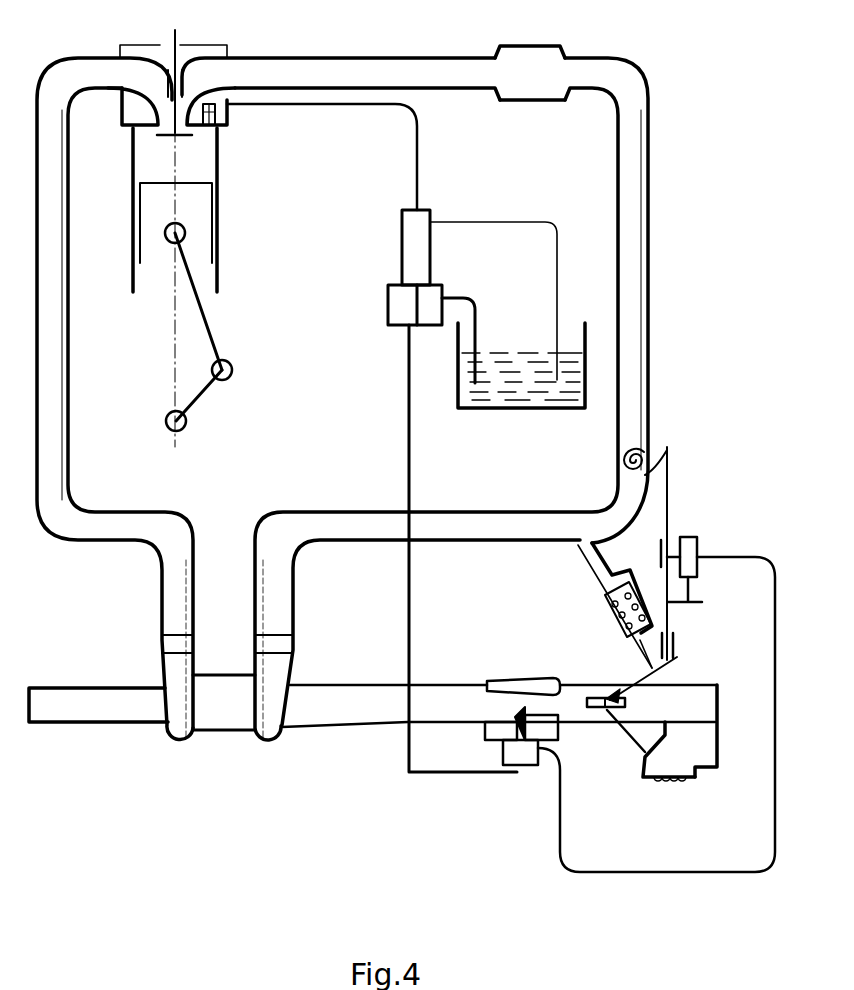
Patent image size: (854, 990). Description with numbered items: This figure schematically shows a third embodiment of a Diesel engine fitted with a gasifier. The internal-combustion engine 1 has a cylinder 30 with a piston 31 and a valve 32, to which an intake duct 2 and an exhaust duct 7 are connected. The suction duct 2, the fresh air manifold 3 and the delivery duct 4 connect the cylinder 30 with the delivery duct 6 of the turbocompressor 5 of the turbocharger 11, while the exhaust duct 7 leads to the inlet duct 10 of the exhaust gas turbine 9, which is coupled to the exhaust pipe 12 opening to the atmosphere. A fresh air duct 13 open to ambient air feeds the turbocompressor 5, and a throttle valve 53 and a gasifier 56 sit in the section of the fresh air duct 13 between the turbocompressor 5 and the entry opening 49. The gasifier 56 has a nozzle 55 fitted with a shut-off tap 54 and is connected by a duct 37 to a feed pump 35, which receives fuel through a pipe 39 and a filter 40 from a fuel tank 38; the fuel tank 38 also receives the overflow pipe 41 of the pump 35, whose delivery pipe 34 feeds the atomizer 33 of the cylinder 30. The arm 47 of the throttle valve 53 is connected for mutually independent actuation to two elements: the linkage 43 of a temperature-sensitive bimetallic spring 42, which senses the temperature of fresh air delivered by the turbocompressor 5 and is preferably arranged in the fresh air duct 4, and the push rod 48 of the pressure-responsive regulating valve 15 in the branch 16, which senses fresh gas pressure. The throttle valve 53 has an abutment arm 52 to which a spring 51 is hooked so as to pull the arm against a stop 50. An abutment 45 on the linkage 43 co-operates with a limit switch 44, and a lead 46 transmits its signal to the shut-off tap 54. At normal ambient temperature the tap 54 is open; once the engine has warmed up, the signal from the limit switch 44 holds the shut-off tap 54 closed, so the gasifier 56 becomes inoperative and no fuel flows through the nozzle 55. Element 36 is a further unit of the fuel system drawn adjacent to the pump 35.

The internal-combustion engine 1 is at (195, 62).
The intake duct 2 is at (368, 72).
The fresh air manifold 3 is at (523, 62).
The delivery duct 4 is at (628, 96).
The turbocompressor 5 is at (268, 740).
The delivery duct of the turbocompressor 6 is at (292, 642).
The exhaust duct 7 is at (105, 78).
The exhaust gas turbine 9 is at (170, 676).
The inlet duct of the exhaust gas turbine 10 is at (165, 640).
The turbocharger 11 is at (212, 720).
The exhaust pipe 12 is at (82, 710).
The fresh air duct 13 is at (342, 708).
The pressure-responsive regulating valve 15 is at (612, 590).
The branch pipe 16 is at (592, 555).
The cylinder 30 is at (217, 292).
The piston 31 is at (215, 260).
The valve 32 is at (188, 140).
The atomizer 33 is at (215, 115).
The delivery pipe 34 is at (378, 106).
The feed pump 35 is at (402, 232).
The control unit 36 is at (388, 305).
The duct 37 is at (407, 420).
The fuel tank 38 is at (520, 395).
The pipe 39 is at (477, 340).
The filter 40 is at (430, 300).
The overflow pipe 41 is at (482, 224).
The temperature-sensitive bimetallic spring 42 is at (645, 452).
The linkage 43 is at (670, 486).
The limit switch 44 is at (690, 556).
The abutment 45 is at (697, 604).
The lead 46 is at (772, 574).
The arm 47 is at (680, 660).
The push rod 48 is at (645, 656).
The entry opening 49 is at (719, 720).
The stop 50 is at (700, 750).
The spring 51 is at (666, 781).
The abutment arm 52 is at (628, 740).
The throttle valve 53 is at (592, 710).
The shut-off tap 54 is at (512, 765).
The nozzle 55 is at (510, 742).
The gasifier 56 is at (500, 712).